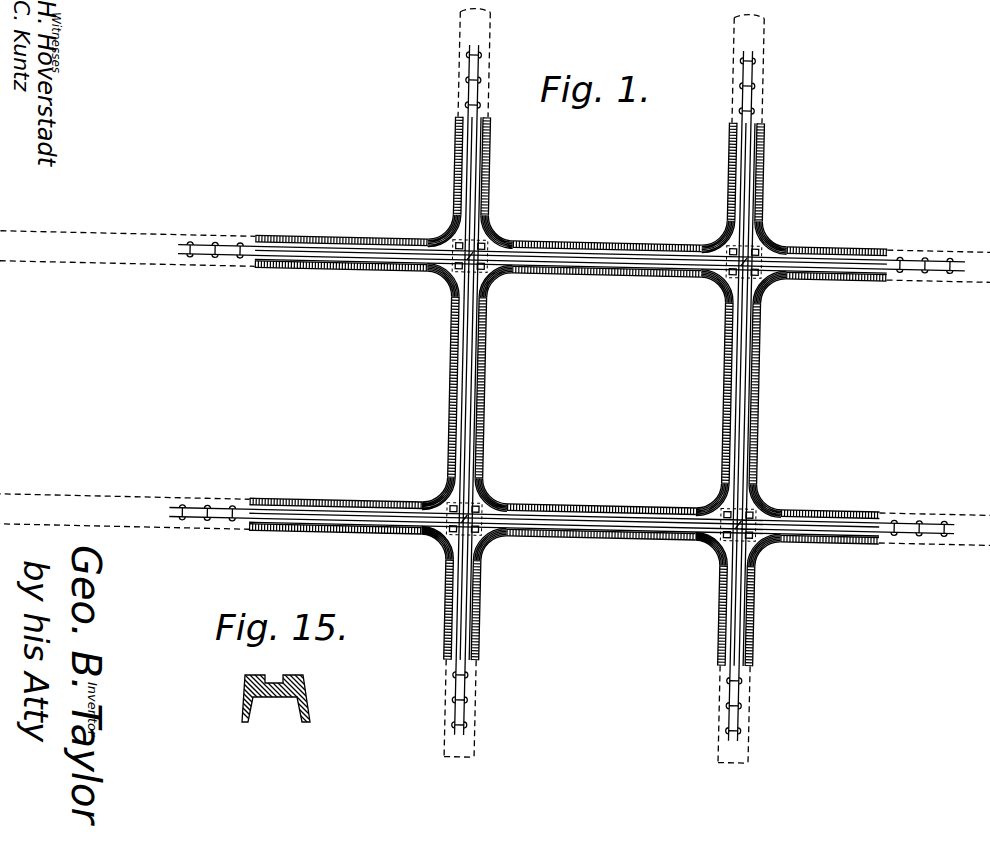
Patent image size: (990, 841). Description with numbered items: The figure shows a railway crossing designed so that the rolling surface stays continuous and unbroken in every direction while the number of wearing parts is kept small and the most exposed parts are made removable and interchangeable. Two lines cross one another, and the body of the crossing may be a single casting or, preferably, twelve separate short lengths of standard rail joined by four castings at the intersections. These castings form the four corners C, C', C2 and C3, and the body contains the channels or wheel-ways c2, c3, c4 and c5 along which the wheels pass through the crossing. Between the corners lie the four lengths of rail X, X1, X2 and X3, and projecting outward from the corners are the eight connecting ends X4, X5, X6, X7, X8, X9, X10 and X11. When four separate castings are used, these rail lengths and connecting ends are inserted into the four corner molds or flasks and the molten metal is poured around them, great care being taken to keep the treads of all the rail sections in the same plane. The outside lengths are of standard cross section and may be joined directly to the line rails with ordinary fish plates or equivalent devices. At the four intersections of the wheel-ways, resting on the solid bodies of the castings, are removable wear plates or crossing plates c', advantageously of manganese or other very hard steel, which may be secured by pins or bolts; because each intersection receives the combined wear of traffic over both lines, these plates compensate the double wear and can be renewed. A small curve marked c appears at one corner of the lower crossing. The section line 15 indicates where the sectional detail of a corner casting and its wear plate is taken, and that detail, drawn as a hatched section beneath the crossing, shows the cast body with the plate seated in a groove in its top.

The length of rail X is at (484, 399).
The length of rail X1 is at (640, 509).
The length of rail X2 is at (727, 388).
The length of rail X3 is at (577, 272).
The connecting end X4 is at (352, 270).
The connecting end X5 is at (484, 185).
The connecting end X6 is at (727, 186).
The connecting end X7 is at (812, 254).
The connecting end X8 is at (831, 546).
The connecting end X9 is at (752, 641).
The connecting end X10 is at (480, 592).
The connecting end X11 is at (335, 532).
The corner C is at (467, 250).
The corner C' is at (752, 254).
The corner C2 is at (448, 525).
The corner C3 is at (750, 531).
The curve c is at (432, 488).
The wear plate c' is at (624, 396).
The channel or wheel-way c2 is at (480, 364).
The channel or wheel-way c3 is at (626, 536).
The channel or wheel-way c4 is at (760, 367).
The channel or wheel-way c5 is at (586, 252).
The section line 15 is at (492, 494).